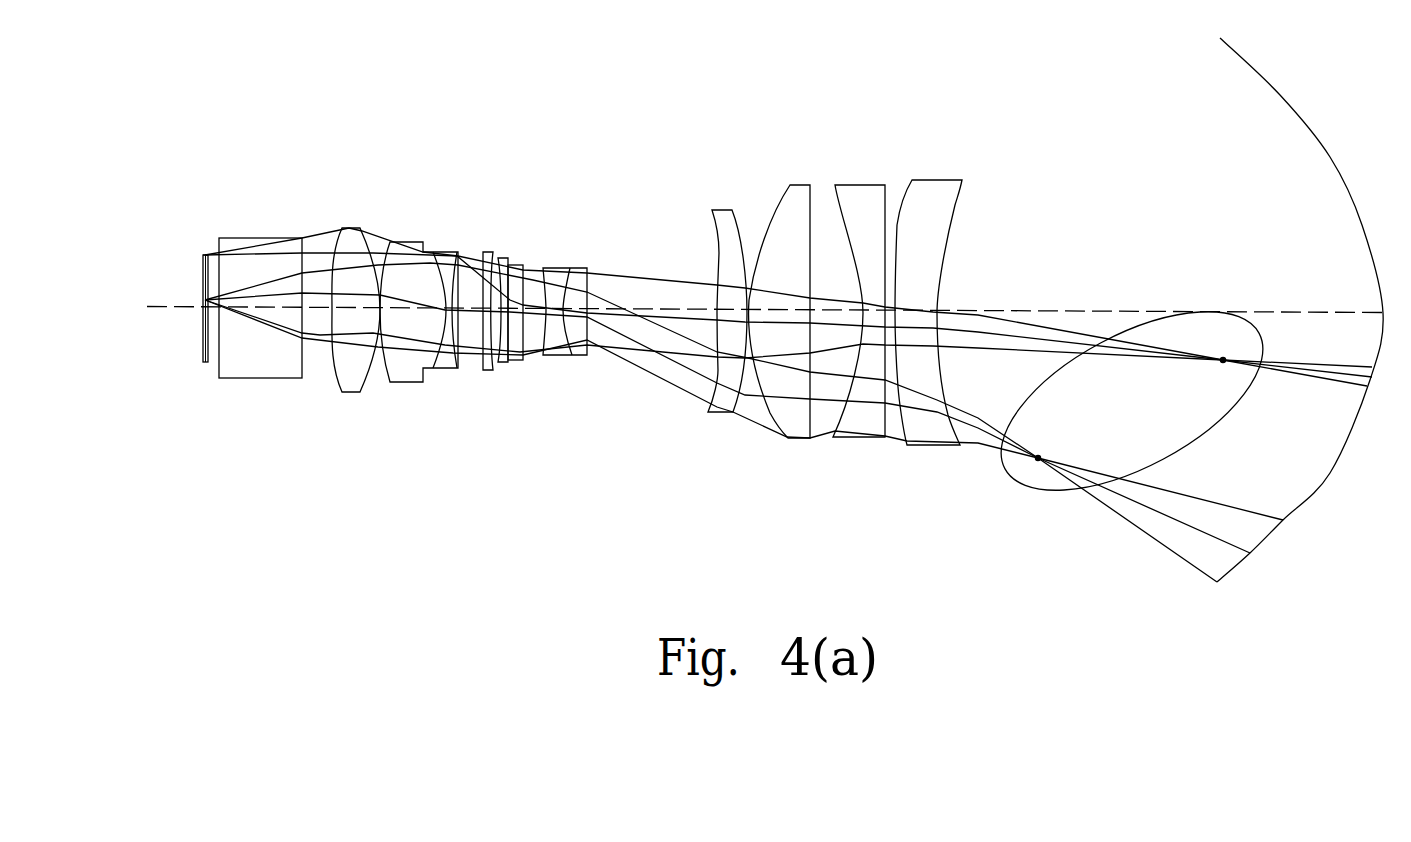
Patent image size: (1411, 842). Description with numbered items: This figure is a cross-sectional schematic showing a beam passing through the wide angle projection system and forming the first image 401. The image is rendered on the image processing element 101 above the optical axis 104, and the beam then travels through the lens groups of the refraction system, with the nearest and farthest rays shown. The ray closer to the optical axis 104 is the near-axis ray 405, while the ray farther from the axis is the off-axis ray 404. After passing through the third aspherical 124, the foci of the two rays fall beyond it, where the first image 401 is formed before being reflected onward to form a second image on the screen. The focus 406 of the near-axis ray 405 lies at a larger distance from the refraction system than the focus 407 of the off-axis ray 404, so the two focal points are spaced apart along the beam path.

The image processing element 101 is at (203, 270).
The optical axis 104 is at (175, 307).
The third aspherical 124 is at (942, 178).
The first image 401 is at (1132, 330).
The off-axis ray 404 is at (213, 255).
The near-axis ray 405 is at (232, 302).
The focus of the near-axial light 406 is at (1223, 360).
The focus of the off-axial light 407 is at (1038, 458).